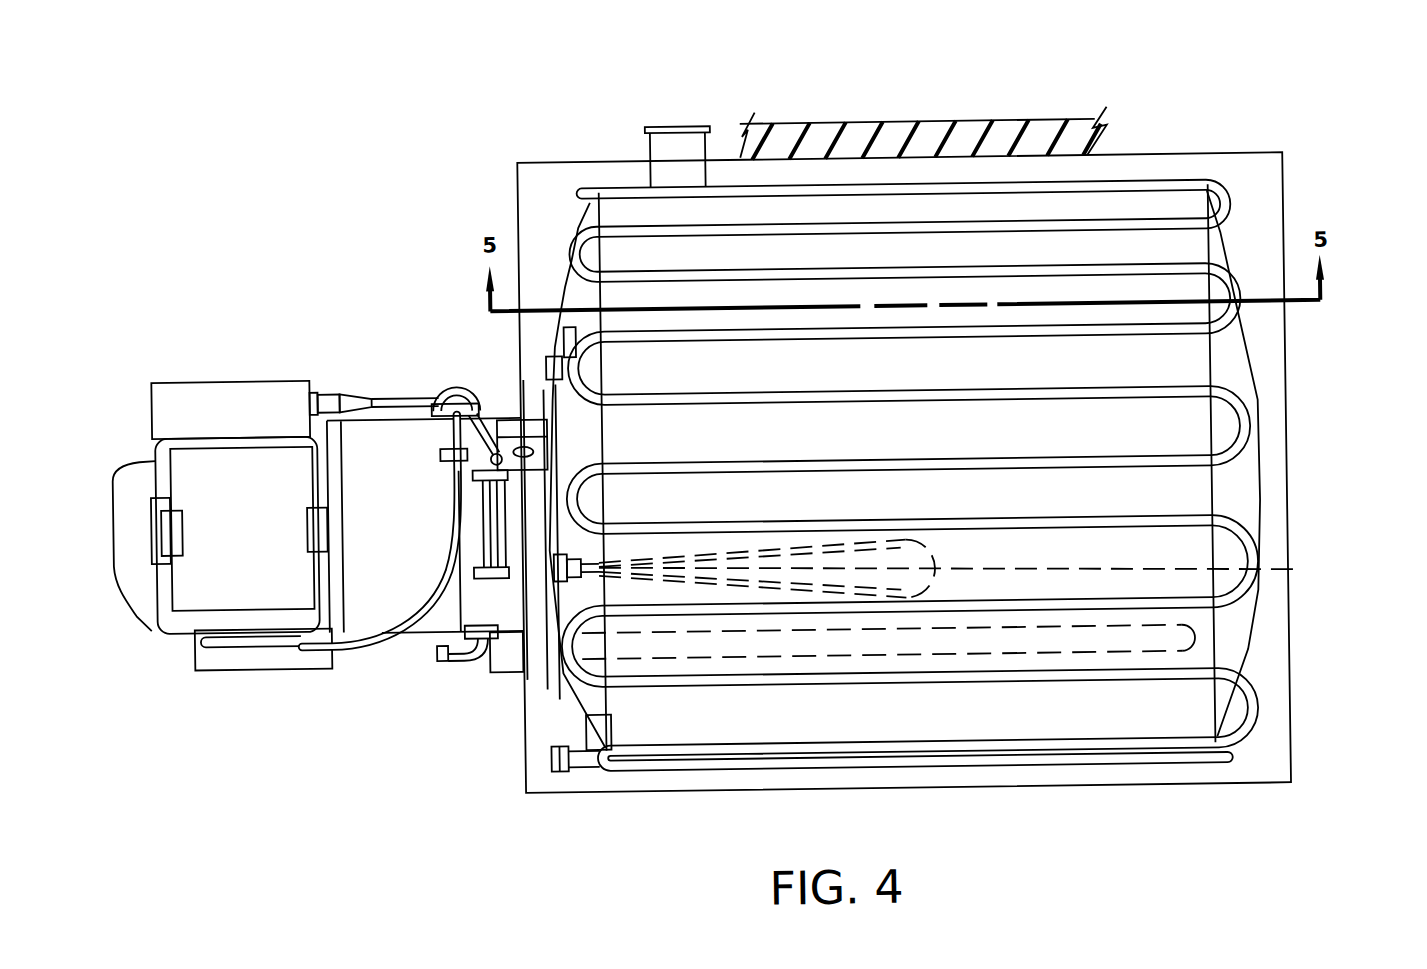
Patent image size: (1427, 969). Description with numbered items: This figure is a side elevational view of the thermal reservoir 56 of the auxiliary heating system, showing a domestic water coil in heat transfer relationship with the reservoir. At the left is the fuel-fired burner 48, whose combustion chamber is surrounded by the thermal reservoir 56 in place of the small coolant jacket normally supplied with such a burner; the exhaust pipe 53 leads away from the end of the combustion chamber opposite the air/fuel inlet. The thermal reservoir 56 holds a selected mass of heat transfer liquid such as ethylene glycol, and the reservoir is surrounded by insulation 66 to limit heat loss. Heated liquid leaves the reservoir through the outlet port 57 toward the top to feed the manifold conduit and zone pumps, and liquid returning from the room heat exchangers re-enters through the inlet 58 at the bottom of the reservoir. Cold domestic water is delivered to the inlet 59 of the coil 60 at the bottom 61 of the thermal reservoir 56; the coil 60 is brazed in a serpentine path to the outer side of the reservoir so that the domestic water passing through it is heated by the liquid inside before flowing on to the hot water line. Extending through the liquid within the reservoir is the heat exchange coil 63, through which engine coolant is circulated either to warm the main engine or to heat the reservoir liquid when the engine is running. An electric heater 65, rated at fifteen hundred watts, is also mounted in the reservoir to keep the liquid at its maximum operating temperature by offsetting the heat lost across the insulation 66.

The burner 48 is at (215, 378).
The exhaust pipe 53 is at (491, 663).
The thermal reservoir 56 is at (1097, 213).
The outlet port 57 is at (549, 372).
The inlet 58 is at (580, 733).
The inlet 59 is at (544, 762).
The coil 60 is at (1141, 231).
The bottom 61 is at (521, 785).
The heat exchange coil 63 is at (1193, 652).
The electric heater 65 is at (1297, 580).
The insulation 66 is at (902, 130).